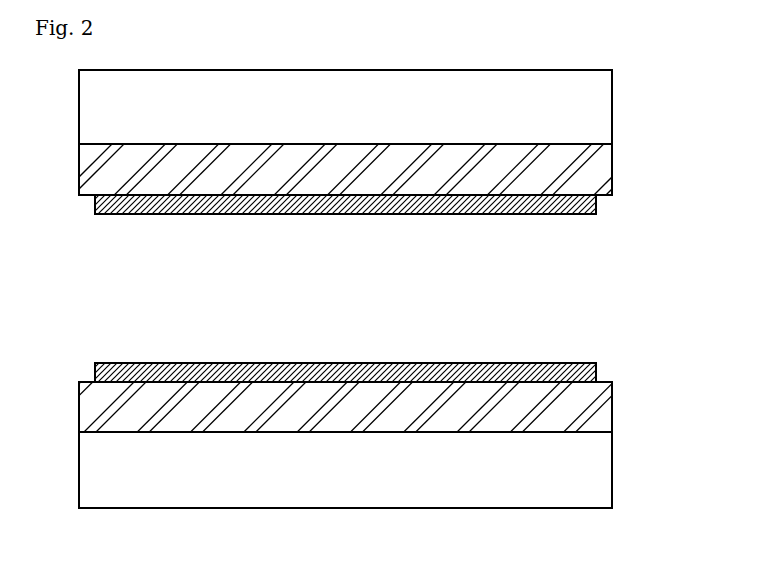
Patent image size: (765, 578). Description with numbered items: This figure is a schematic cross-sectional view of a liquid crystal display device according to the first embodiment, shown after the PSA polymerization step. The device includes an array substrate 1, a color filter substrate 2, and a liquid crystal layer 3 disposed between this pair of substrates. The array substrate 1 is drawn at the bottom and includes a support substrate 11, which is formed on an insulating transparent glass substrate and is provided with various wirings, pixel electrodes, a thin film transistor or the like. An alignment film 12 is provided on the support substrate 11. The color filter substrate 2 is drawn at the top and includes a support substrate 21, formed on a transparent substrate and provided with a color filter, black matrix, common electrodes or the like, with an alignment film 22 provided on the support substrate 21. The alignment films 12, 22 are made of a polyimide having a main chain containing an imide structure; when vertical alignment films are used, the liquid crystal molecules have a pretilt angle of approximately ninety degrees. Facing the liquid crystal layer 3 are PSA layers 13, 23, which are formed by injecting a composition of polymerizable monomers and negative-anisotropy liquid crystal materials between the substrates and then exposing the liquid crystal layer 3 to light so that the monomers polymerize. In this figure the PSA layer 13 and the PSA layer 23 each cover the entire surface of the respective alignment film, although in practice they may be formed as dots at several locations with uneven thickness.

The array substrate 1 is at (70, 365).
The color filter substrate 2 is at (70, 70).
The liquid crystal layer 3 is at (70, 214).
The support substrate 11 is at (597, 470).
The alignment film 12 is at (597, 409).
The PSA layer 13 is at (596, 373).
The support substrate 21 is at (597, 104).
The alignment film 22 is at (597, 173).
The PSA layer 23 is at (596, 205).